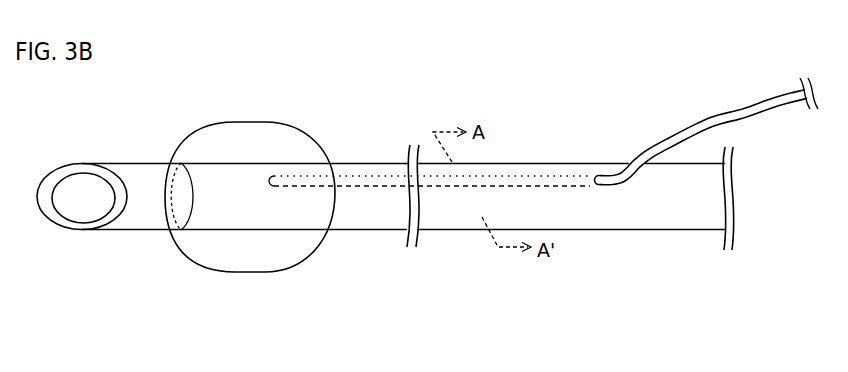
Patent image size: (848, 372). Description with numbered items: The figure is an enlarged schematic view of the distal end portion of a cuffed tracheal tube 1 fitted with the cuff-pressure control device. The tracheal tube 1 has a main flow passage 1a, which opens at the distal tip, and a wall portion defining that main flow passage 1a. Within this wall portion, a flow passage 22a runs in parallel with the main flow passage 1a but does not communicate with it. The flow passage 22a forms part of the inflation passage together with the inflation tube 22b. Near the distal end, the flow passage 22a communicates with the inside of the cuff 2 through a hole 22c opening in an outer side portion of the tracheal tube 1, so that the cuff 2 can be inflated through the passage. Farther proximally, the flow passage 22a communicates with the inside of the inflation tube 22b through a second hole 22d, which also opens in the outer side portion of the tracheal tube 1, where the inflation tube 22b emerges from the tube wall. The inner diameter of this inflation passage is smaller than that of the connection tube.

The tracheal tube 1 is at (642, 232).
The main flow passage 1a is at (83, 200).
The cuff 2 is at (280, 122).
The flow passage 22a is at (540, 178).
The inflation tube 22b is at (743, 107).
The hole 22c is at (275, 180).
The hole 22d is at (593, 166).